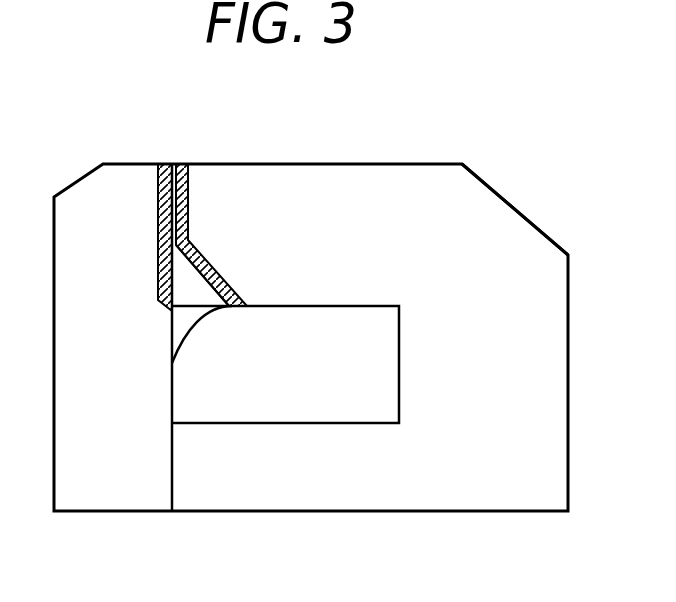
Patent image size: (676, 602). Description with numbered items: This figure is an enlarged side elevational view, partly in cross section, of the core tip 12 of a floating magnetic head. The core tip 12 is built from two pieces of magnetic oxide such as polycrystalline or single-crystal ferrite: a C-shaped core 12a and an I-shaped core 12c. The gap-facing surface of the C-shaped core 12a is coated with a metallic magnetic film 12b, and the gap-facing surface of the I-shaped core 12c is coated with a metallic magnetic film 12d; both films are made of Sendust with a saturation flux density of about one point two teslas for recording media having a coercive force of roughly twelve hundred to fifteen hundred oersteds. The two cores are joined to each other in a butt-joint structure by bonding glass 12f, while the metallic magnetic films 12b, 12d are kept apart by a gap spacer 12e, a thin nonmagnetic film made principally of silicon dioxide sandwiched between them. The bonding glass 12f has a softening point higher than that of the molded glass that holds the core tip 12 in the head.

The core tip 12 is at (386, 165).
The C-shaped core 12a is at (498, 218).
The metallic magnetic film 12b is at (187, 162).
The I-shaped core 12c is at (98, 488).
The metallic magnetic film 12d is at (162, 162).
The gap spacer 12e is at (177, 162).
The bonding glass 12f is at (200, 297).